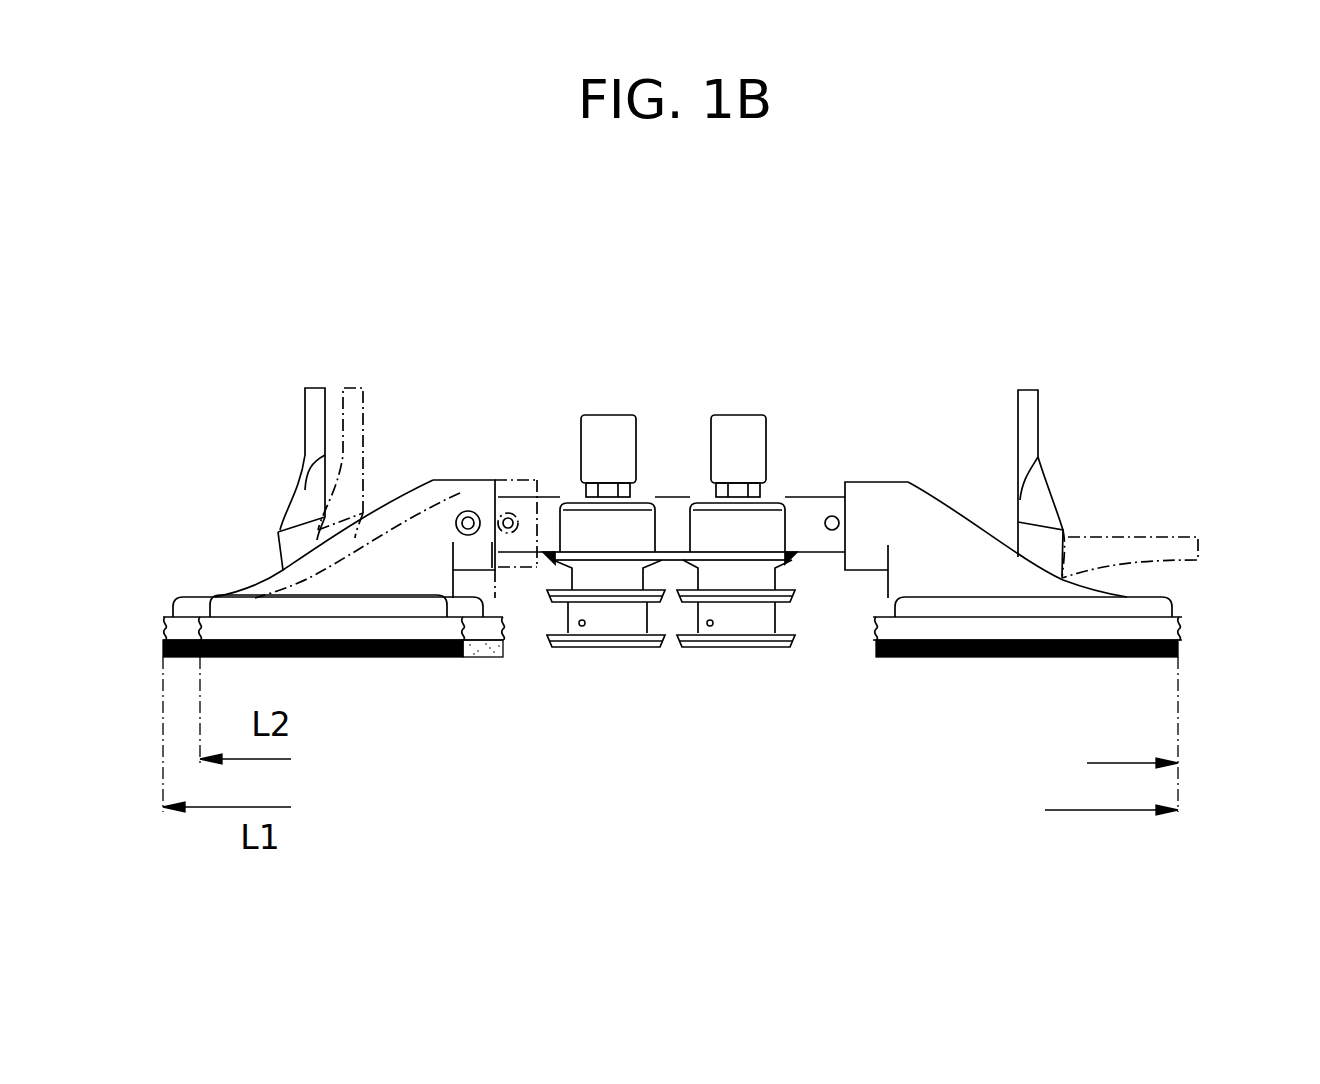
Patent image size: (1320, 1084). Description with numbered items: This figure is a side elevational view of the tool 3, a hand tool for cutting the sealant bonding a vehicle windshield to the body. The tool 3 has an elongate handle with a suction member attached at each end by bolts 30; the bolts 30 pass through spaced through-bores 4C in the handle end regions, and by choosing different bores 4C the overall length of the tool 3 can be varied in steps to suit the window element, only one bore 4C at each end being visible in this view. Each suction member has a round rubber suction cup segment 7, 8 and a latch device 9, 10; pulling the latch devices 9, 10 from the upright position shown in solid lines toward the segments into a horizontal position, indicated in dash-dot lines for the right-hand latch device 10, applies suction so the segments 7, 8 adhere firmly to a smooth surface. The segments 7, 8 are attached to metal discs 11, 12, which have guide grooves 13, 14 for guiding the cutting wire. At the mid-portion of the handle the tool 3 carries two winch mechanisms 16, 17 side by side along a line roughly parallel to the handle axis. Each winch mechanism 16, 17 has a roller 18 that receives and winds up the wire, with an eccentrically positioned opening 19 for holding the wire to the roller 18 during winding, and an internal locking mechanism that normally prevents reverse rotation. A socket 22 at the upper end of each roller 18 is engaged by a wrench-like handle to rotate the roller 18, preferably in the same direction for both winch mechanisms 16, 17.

The tool 3 is at (953, 319).
The through-bores 4C is at (834, 516).
The rubber suction cup segment 7 is at (411, 657).
The rubber suction cup segment 8 is at (1053, 660).
The latch device 9 is at (313, 413).
The latch device 10 is at (1030, 500).
The metal disc 11 is at (310, 627).
The metal disc 12 is at (962, 628).
The guide groove 13 is at (163, 623).
The guide groove 14 is at (1180, 637).
The winch mechanism 16 is at (620, 708).
The winch mechanism 17 is at (732, 720).
The roller 18 is at (755, 620).
The eccentrically positioned opening 19 is at (581, 626).
The socket 22 is at (738, 450).
The bolts 30 is at (466, 512).